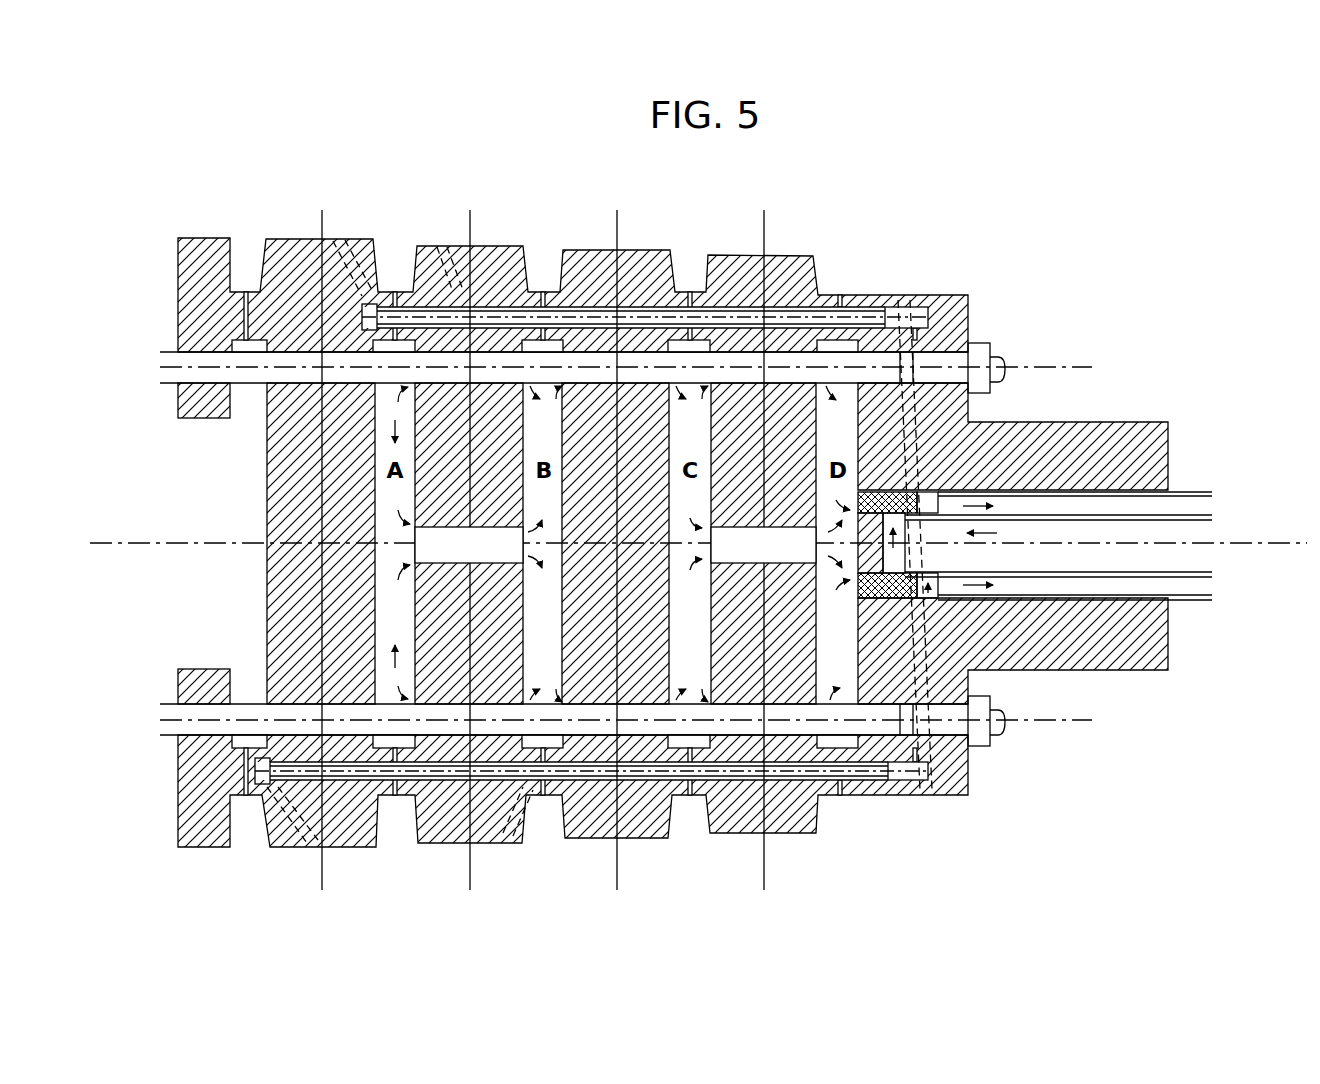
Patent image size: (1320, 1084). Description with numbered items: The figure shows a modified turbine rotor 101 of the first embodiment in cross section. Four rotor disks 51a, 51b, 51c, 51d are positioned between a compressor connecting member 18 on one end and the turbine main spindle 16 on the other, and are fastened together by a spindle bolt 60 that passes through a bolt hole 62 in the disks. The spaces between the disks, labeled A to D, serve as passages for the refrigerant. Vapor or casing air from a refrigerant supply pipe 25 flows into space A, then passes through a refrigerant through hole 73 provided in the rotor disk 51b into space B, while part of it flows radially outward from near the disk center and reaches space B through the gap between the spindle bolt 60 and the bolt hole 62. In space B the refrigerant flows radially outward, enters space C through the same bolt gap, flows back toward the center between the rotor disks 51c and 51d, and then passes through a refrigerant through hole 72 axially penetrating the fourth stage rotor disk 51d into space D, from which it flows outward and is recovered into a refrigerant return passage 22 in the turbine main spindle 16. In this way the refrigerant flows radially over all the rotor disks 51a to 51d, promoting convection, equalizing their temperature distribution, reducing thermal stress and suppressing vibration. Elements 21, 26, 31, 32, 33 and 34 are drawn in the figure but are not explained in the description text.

The turbine rotor 101 is at (962, 240).
The turbine main spindle 16 is at (1128, 440).
The compressor connecting member 18 is at (198, 238).
The inner tube 21 is at (1202, 532).
The refrigerant return passage 22 is at (1177, 503).
The refrigerant supply pipe 25 is at (781, 303).
The lower housing plate with fins 26 is at (853, 797).
The inclined inlet passage 31 is at (345, 241).
The inclined inlet passage 32 is at (275, 848).
The inclined passage 33 is at (440, 247).
The inclined passage 34 is at (520, 847).
The rotor disk 51a is at (296, 239).
The rotor disk 51b is at (496, 246).
The rotor disk 51c is at (595, 250).
The rotor disk 51d is at (728, 255).
The spindle bolt 60 is at (968, 335).
The bolt hole 62 is at (815, 305).
The refrigerant through hole 72 is at (740, 563).
The refrigerant through hole 73 is at (448, 563).